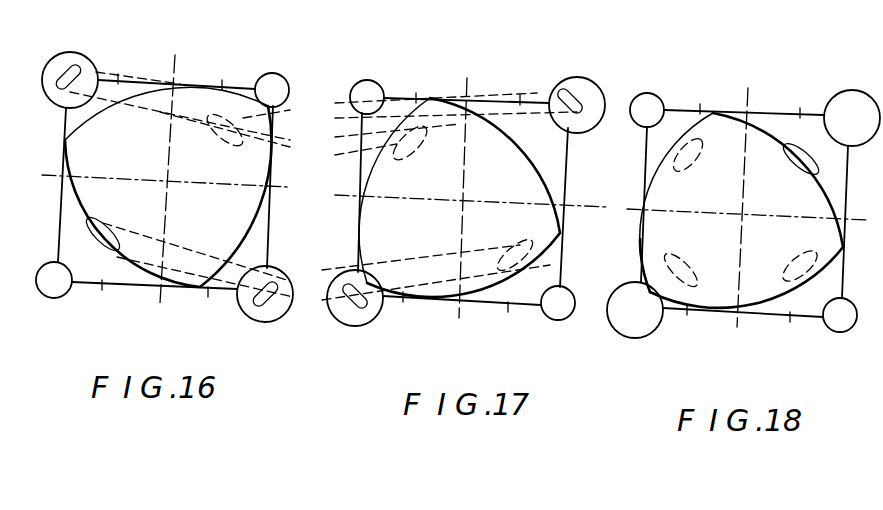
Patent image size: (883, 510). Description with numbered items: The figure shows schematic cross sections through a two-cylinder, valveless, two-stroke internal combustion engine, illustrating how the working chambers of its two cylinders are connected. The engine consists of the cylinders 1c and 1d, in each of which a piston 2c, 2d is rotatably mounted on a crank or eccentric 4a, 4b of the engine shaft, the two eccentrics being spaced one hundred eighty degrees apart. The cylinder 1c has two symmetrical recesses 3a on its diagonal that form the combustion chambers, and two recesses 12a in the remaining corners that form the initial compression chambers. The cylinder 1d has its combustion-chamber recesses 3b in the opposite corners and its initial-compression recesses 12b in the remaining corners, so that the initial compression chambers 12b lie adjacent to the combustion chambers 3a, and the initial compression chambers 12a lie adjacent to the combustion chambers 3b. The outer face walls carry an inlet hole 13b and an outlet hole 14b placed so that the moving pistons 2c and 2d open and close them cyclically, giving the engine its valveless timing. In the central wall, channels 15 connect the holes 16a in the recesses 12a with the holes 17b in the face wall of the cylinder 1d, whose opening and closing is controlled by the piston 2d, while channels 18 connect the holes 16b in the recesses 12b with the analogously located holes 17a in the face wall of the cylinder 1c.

In FIG. 16, the cylinder 1c is at (66, 182).
In FIG. 17, the cylinder 1d is at (568, 168).
In FIG. 18, the cylinder 1d is at (647, 182).
In FIG. 16, the piston 2c is at (88, 203).
In FIG. 17, the piston 2d is at (561, 243).
In FIG. 18, the piston 2d is at (643, 241).
In FIG. 16, the recess 3a is at (271, 74).
In FIG. 17, the recess 3b is at (552, 316).
In FIG. 18, the recess 3b is at (655, 99).
In FIG. 16, the crank or eccentric 4a is at (172, 183).
In FIG. 17, the crank or eccentric 4b is at (453, 200).
In FIG. 18, the crank or eccentric 4b is at (735, 216).
In FIG. 16, the recess 12a is at (92, 63).
In FIG. 17, the recess 12b is at (597, 72).
In FIG. 18, the recess 12b is at (853, 103).
In FIG. 18, the inlet hole 13b is at (811, 157).
In FIG. 18, the outlet hole 14b is at (702, 152).
In FIG. 16, the channel 15 is at (161, 112).
In FIG. 17, the channel 15 is at (442, 127).
In FIG. 16, the hole 16a is at (70, 64).
In FIG. 17, the hole 16b is at (561, 90).
In FIG. 16, the hole 17a is at (225, 139).
In FIG. 17, the hole 17b is at (410, 159).
In FIG. 16, the channel 18 is at (209, 241).
In FIG. 17, the channel 18 is at (417, 257).